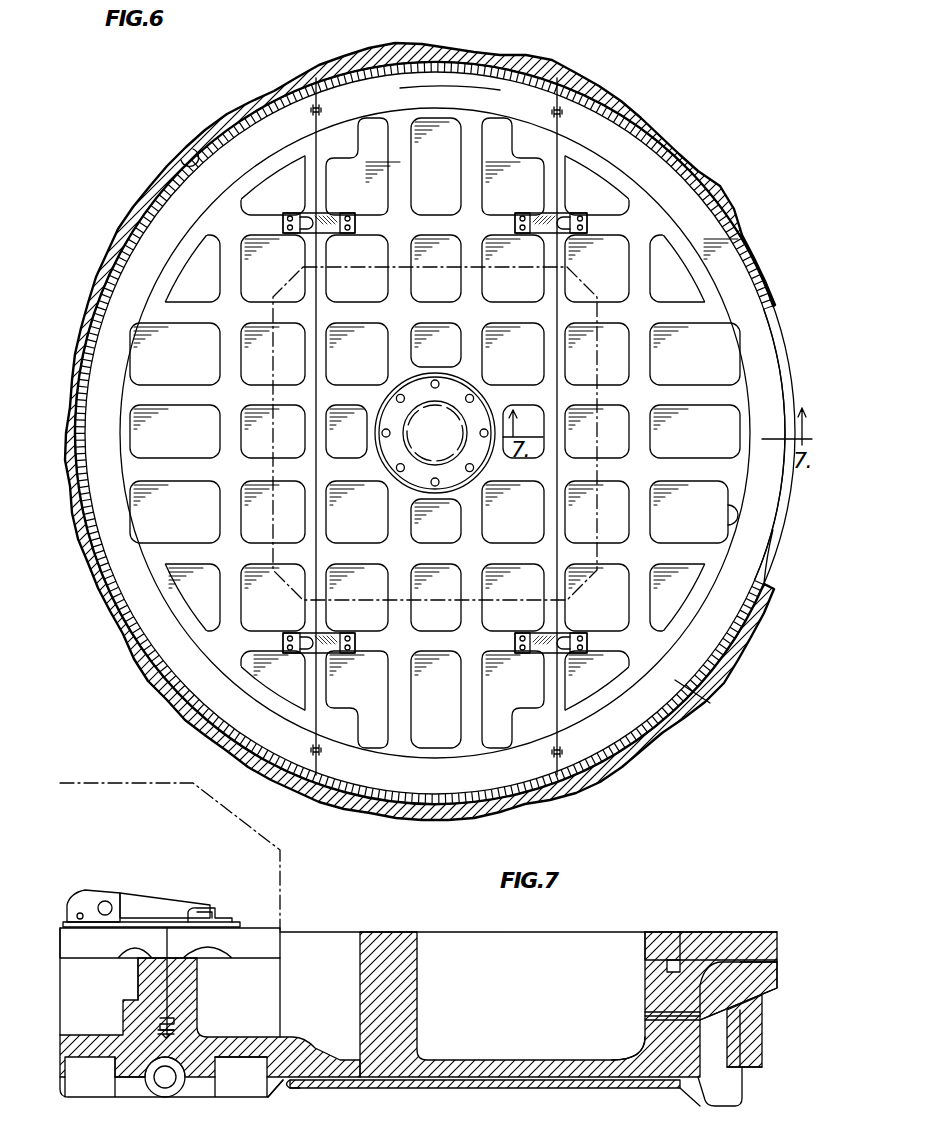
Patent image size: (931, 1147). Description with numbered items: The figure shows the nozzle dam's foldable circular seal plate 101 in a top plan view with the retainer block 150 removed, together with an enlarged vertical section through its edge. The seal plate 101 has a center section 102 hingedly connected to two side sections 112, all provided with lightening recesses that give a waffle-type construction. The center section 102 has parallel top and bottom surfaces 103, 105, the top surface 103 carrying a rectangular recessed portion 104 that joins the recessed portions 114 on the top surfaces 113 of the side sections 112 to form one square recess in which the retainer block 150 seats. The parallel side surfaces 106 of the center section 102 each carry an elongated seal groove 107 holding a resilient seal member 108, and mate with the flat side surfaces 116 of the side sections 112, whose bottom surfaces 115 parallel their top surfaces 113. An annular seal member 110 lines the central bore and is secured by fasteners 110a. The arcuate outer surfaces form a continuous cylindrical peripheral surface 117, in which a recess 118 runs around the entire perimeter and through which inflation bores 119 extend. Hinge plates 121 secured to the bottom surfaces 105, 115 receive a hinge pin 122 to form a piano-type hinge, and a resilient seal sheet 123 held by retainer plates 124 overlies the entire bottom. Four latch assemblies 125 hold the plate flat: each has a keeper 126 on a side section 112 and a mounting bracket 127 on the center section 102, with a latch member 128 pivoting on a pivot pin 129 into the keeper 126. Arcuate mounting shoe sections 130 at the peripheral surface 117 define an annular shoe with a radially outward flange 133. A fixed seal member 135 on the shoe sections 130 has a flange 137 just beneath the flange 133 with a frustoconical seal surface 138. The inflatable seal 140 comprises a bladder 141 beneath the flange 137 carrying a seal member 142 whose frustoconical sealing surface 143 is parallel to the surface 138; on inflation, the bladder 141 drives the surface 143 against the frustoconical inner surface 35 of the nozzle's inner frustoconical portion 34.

In FIG. 6, the inner frustoconical portion 34 is at (128, 208).
In FIG. 6, the frustoconical inner surface 35 is at (181, 158).
In FIG. 6, the seal plate 101 is at (716, 32).
In FIG. 6, the center section 102 is at (505, 92).
In FIG. 7, the center section 102 is at (98, 1035).
In FIG. 6, the top surface 103 is at (447, 94).
In FIG. 6, the recessed portion 104 is at (383, 268).
In FIG. 7, the recessed portion 104 is at (122, 981).
In FIG. 7, the bottom surface 105 is at (130, 1080).
In FIG. 6, the side surfaces 106 is at (314, 770).
In FIG. 7, the side surfaces 106 is at (140, 992).
In FIG. 7, the seal groove 107 is at (175, 1010).
In FIG. 6, the resilient seal member 108 is at (560, 117).
In FIG. 7, the resilient seal member 108 is at (172, 1030).
In FIG. 6, the annular seal member 110 is at (413, 387).
In FIG. 6, the fasteners 110a is at (465, 397).
In FIG. 6, the side sections 112 is at (697, 210).
In FIG. 7, the side sections 112 is at (400, 942).
In FIG. 6, the top surface 113 is at (666, 182).
In FIG. 6, the recessed portion 114 is at (620, 360).
In FIG. 7, the recessed portion 114 is at (215, 955).
In FIG. 7, the bottom surface 115 is at (278, 1082).
In FIG. 6, the side surface 116 is at (338, 76).
In FIG. 6, the peripheral surface 117 is at (740, 512).
In FIG. 7, the peripheral surface 117 is at (692, 932).
In FIG. 7, the recess 118 is at (667, 967).
In FIG. 7, the inflation bore 119 is at (655, 1032).
In FIG. 7, the hinge plates 121 is at (225, 1085).
In FIG. 7, the hinge pin 122 is at (170, 1082).
In FIG. 7, the resilient seal sheet 123 is at (284, 1088).
In FIG. 7, the retainer plates 124 is at (460, 1090).
In FIG. 6, the latch assemblies 125 is at (342, 205).
In FIG. 7, the latch assemblies 125 is at (140, 871).
In FIG. 7, the keeper 126 is at (222, 918).
In FIG. 7, the mounting bracket 127 is at (85, 903).
In FIG. 7, the latch member 128 is at (160, 912).
In FIG. 7, the pivot pin 129 is at (105, 900).
In FIG. 7, the mounting shoe sections 130 is at (683, 1000).
In FIG. 6, the annular flange 133 is at (715, 708).
In FIG. 7, the annular flange 133 is at (720, 935).
In FIG. 7, the fixed seal member 135 is at (676, 1086).
In FIG. 6, the annular flange 137 is at (766, 553).
In FIG. 7, the annular flange 137 is at (745, 962).
In FIG. 7, the frustoconical seal surface 138 is at (780, 962).
In FIG. 7, the inflatable seal 140 is at (774, 1013).
In FIG. 7, the inflatable bladder 141 is at (720, 1078).
In FIG. 7, the seal member 142 is at (746, 1068).
In FIG. 7, the frustoconical sealing surface 143 is at (762, 1045).
In FIG. 6, the retainer block 150 is at (265, 348).
In FIG. 7, the retainer block 150 is at (283, 868).